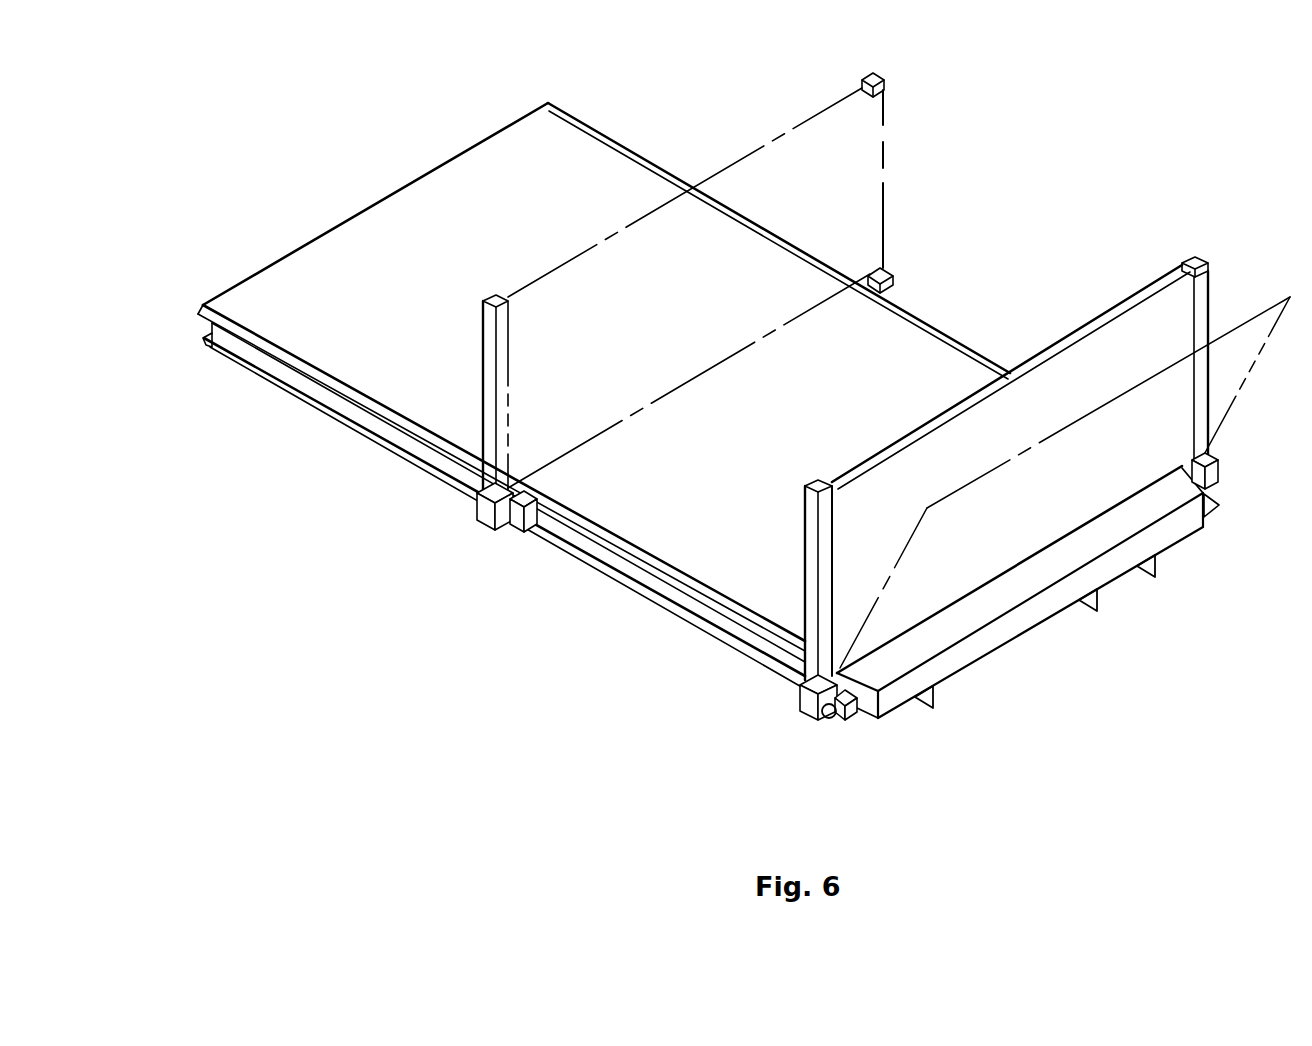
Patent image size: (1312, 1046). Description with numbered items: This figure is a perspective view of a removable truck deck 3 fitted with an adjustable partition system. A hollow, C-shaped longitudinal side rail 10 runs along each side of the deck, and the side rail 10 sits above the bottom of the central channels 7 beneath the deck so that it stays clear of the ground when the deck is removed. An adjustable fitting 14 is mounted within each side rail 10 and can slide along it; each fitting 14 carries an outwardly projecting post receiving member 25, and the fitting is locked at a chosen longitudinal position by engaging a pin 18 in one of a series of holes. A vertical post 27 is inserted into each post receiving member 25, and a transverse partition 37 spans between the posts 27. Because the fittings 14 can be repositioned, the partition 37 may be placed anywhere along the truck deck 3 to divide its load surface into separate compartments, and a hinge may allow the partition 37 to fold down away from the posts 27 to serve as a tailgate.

The removable truck deck 3 is at (364, 222).
The central channel 7 is at (1147, 579).
The longitudinal side rail 10 is at (178, 323).
The adjustable fitting 14 is at (455, 510).
The pin 18 is at (824, 718).
The post receiving member 25 is at (487, 527).
The vertical post 27 is at (873, 73).
The transverse partition 37 is at (760, 170).